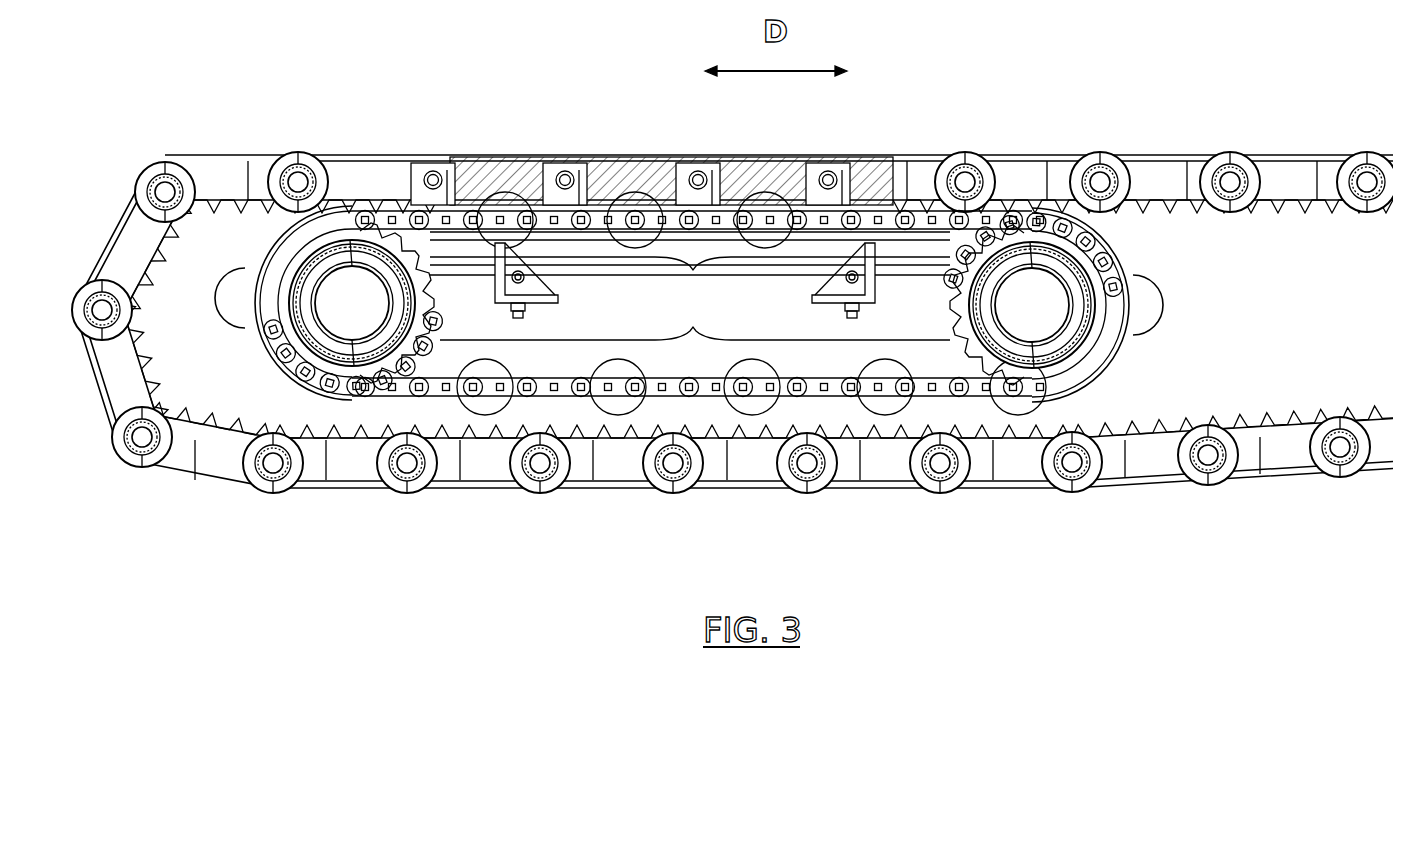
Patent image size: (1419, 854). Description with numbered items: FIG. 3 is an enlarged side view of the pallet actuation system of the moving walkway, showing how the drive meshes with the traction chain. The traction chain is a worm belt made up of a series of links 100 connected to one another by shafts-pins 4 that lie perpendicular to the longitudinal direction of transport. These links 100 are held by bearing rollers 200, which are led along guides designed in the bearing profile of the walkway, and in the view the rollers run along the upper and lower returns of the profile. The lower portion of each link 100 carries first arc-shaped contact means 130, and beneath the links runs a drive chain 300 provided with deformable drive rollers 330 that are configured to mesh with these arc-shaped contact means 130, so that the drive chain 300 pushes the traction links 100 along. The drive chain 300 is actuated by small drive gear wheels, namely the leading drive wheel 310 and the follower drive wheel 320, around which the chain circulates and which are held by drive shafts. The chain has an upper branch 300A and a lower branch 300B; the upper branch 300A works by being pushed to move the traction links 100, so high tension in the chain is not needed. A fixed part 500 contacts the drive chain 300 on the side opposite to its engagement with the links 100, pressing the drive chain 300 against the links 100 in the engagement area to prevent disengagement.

The shafts-pins 4 is at (425, 175).
The links 100 is at (1003, 157).
The first arc-shaped contact means 130 is at (490, 175).
The bearing rollers 200 is at (1118, 162).
The drive chain 300 is at (1180, 299).
The upper branch of the drive chain 300A is at (690, 279).
The lower chain run 300B is at (695, 321).
The leading drive wheel 310 is at (307, 340).
The follower drive wheel 320 is at (1083, 345).
The deformable drive rollers 330 is at (615, 410).
The fixed part 500 is at (812, 273).